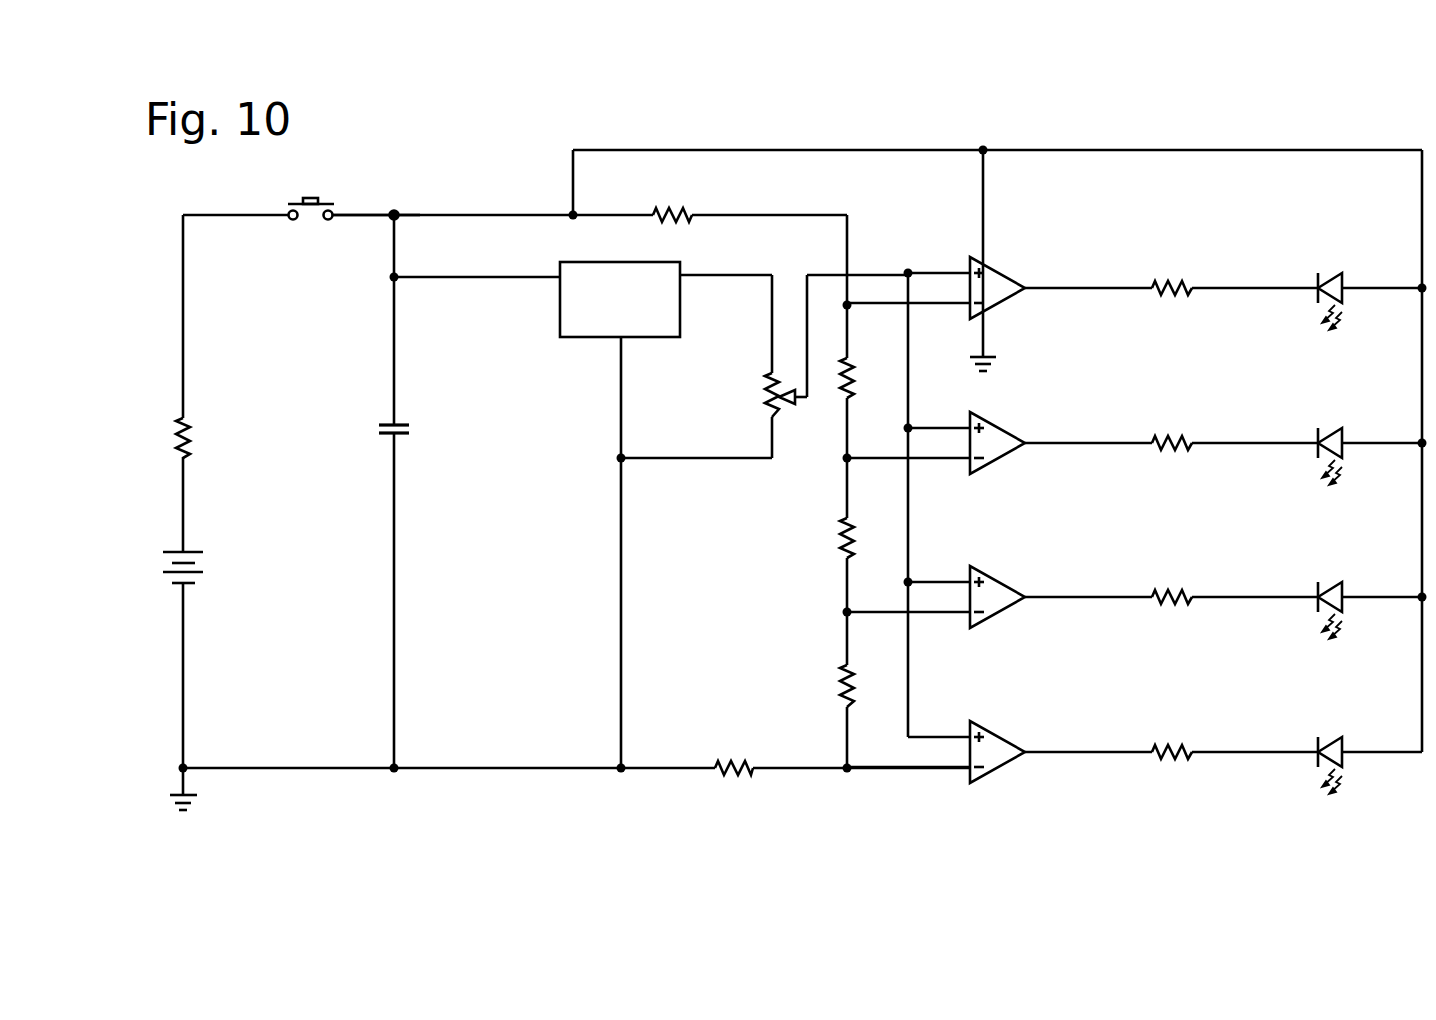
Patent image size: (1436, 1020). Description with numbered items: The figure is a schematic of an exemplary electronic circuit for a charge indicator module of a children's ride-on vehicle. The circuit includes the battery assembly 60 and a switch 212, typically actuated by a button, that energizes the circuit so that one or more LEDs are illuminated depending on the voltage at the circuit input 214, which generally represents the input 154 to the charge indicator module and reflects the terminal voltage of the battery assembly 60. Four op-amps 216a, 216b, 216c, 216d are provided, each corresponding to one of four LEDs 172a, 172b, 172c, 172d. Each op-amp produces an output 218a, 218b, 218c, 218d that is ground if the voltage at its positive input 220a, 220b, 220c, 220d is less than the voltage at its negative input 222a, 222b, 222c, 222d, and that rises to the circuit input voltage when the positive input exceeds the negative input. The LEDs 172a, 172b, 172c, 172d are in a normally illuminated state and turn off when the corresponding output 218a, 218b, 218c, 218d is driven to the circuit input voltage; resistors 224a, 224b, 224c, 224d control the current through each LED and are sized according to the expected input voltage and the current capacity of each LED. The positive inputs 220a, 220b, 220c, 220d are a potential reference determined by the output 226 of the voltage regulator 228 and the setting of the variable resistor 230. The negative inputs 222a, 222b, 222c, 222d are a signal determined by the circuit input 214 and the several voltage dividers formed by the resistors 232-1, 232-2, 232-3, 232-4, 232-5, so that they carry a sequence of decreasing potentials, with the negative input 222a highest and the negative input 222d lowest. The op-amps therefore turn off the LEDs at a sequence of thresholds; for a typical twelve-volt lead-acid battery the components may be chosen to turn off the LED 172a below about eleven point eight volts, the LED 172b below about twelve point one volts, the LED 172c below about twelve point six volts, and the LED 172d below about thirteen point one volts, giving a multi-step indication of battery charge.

The switch 212 is at (306, 198).
The input 154 is at (352, 217).
The circuit input 214 is at (374, 213).
The battery assembly 60 is at (222, 567).
The voltage regulator 228 is at (537, 299).
The output 226 is at (708, 275).
The variable resistor 230 is at (770, 392).
The resistor 232-1 is at (665, 212).
The resistor 232-2 is at (843, 385).
The resistor 232-3 is at (843, 538).
The resistor 232-4 is at (843, 686).
The resistor 232-5 is at (745, 775).
The positive input 220a is at (940, 258).
The negative input 222a is at (950, 306).
The op-amp 216a is at (1005, 277).
The output 218a is at (1065, 290).
The resistor 224a is at (1172, 285).
The LED 172a is at (1329, 281).
The positive input 220b is at (941, 406).
The negative input 222b is at (910, 482).
The op-amp 216b is at (1028, 437).
The output 218b is at (1088, 463).
The resistor 224b is at (1235, 425).
The LED 172b is at (1370, 439).
The positive input 220c is at (940, 560).
The negative input 222c is at (909, 636).
The op-amp 216c is at (1027, 591).
The output 218c is at (1088, 617).
The resistor 224c is at (1235, 579).
The LED 172c is at (1370, 593).
The positive input 220d is at (941, 715).
The negative input 222d is at (910, 791).
The op-amp 216d is at (1028, 746).
The output 218d is at (1088, 772).
The resistor 224d is at (1235, 734).
The LED 172d is at (1370, 748).